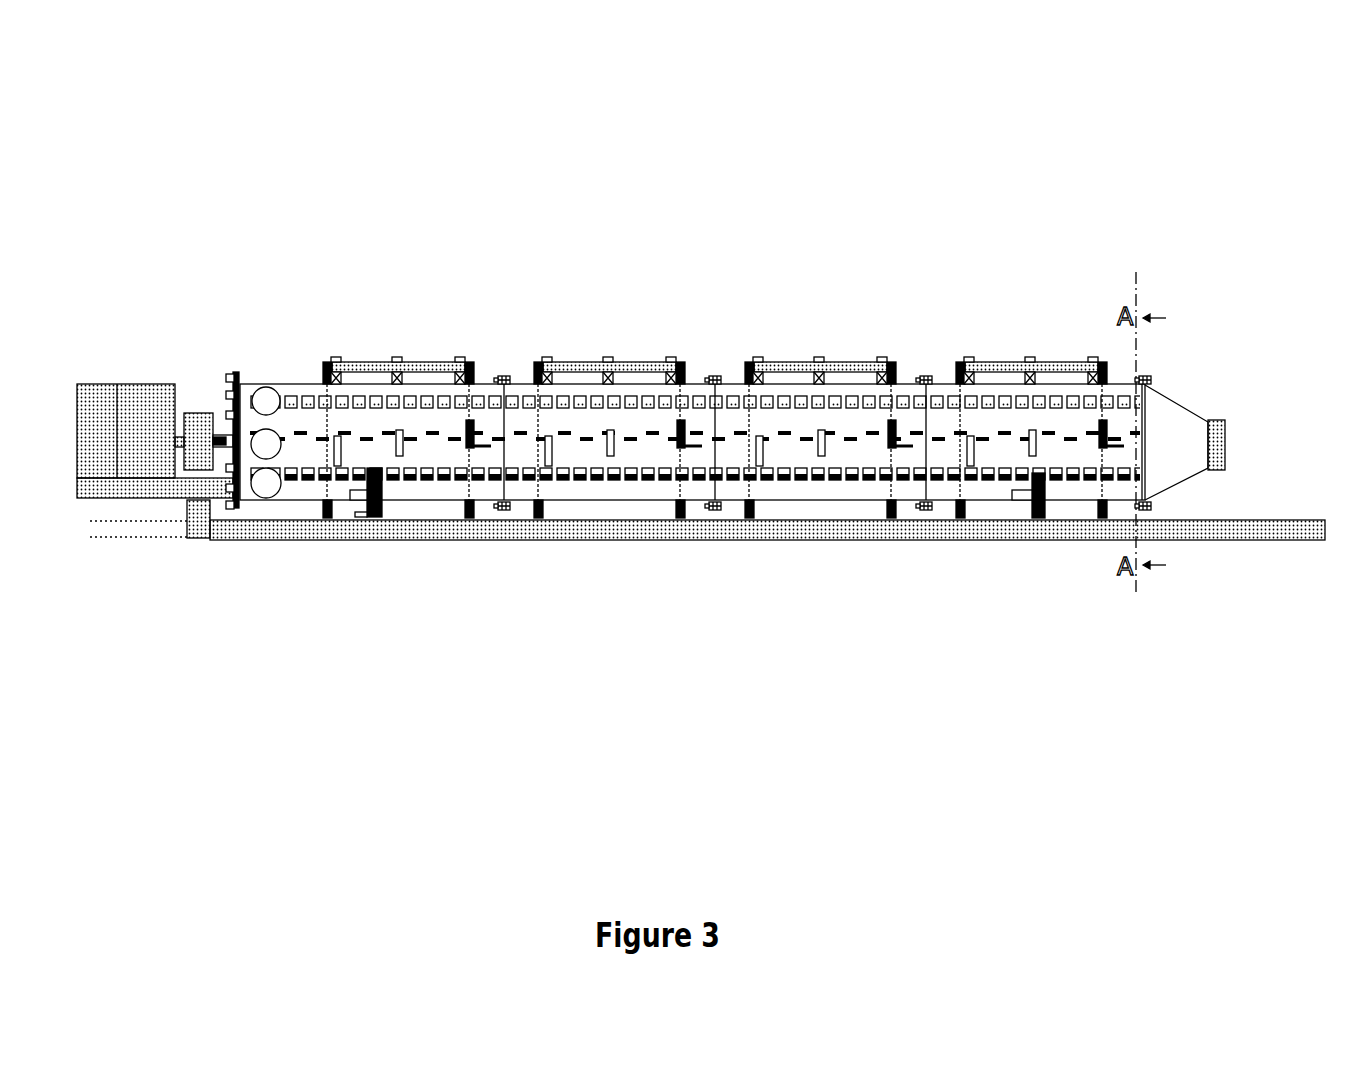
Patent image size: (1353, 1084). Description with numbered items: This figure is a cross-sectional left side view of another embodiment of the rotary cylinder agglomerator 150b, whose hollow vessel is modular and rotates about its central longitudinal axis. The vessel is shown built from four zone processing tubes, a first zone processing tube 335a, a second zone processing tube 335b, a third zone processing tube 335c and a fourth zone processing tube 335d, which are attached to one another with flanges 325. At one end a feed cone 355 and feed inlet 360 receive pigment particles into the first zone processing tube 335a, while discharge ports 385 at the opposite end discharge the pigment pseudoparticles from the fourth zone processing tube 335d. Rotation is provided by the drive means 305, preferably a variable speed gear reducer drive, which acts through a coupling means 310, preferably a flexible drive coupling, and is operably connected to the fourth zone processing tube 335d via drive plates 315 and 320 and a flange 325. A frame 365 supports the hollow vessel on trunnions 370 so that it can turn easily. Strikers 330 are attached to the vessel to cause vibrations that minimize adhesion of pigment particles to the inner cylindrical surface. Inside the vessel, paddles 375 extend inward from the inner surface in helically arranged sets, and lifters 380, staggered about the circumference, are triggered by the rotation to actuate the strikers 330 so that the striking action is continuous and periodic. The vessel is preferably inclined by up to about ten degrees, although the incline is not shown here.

The rotary cylinder agglomerator 150b is at (298, 192).
The drive means 305 is at (138, 383).
The coupling means 310 is at (200, 413).
The drive plate 315 is at (206, 413).
The drive plate 320 is at (228, 380).
The flanges 325 is at (240, 377).
The strikers 330 is at (382, 362).
The first zone processing tube 335a is at (1052, 387).
The second zone processing tube 335b is at (850, 387).
The third zone processing tube 335c is at (645, 387).
The fourth zone processing tube 335d is at (420, 392).
The feed cone 355 is at (1173, 397).
The feed inlet 360 is at (1227, 440).
The frame 365 is at (1108, 530).
The trunnions 370 is at (375, 520).
The paddles 375 is at (907, 487).
The lifters 380 is at (678, 435).
The discharge ports 385 is at (285, 485).